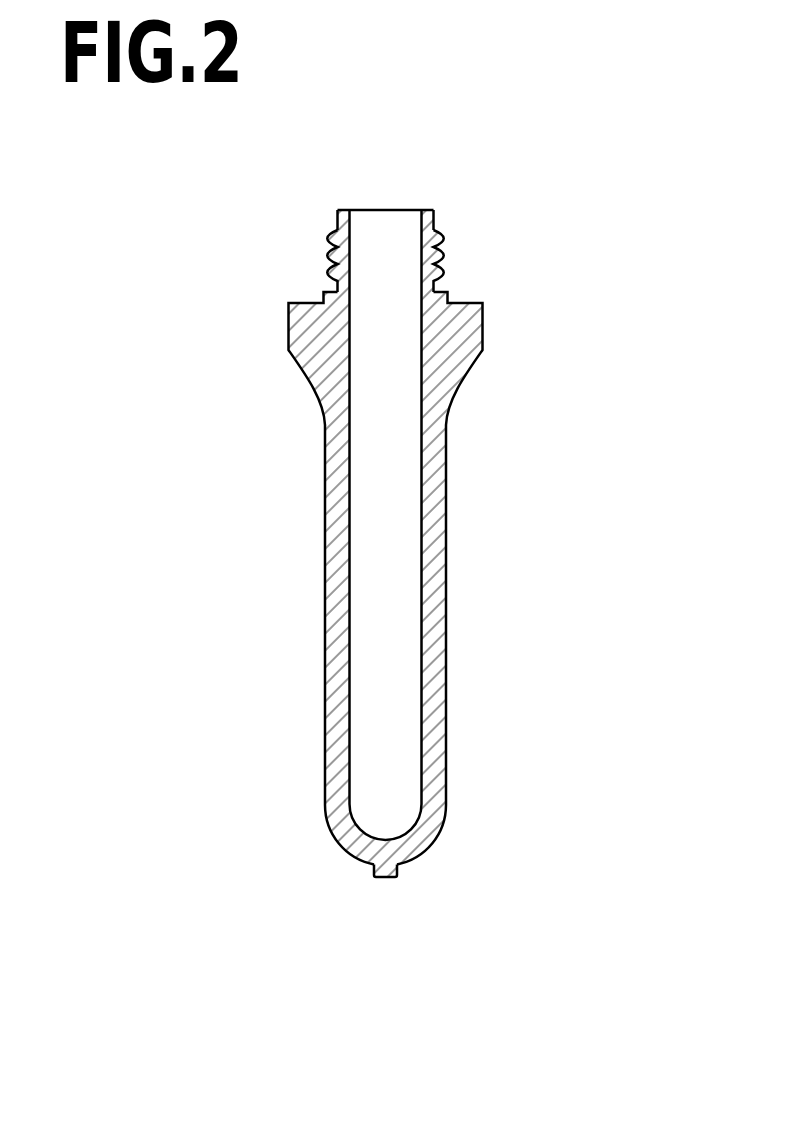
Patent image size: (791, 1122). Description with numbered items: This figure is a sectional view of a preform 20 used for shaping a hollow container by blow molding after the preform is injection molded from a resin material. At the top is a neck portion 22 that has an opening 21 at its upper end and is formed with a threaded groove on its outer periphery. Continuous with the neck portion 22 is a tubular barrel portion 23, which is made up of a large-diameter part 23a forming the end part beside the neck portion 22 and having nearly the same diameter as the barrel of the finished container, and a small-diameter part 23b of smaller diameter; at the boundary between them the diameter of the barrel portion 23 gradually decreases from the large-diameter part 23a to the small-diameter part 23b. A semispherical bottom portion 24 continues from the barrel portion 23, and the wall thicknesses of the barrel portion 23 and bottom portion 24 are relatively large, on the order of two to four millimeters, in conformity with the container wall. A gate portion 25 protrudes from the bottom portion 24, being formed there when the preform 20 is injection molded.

The preform 20 is at (475, 533).
The opening 21 is at (420, 225).
The neck portion 22 is at (446, 252).
The barrel portion 23 is at (475, 548).
The large-diameter part 23a is at (483, 333).
The small-diameter part 23b is at (444, 497).
The bottom portion 24 is at (432, 846).
The gate portion 25 is at (387, 880).